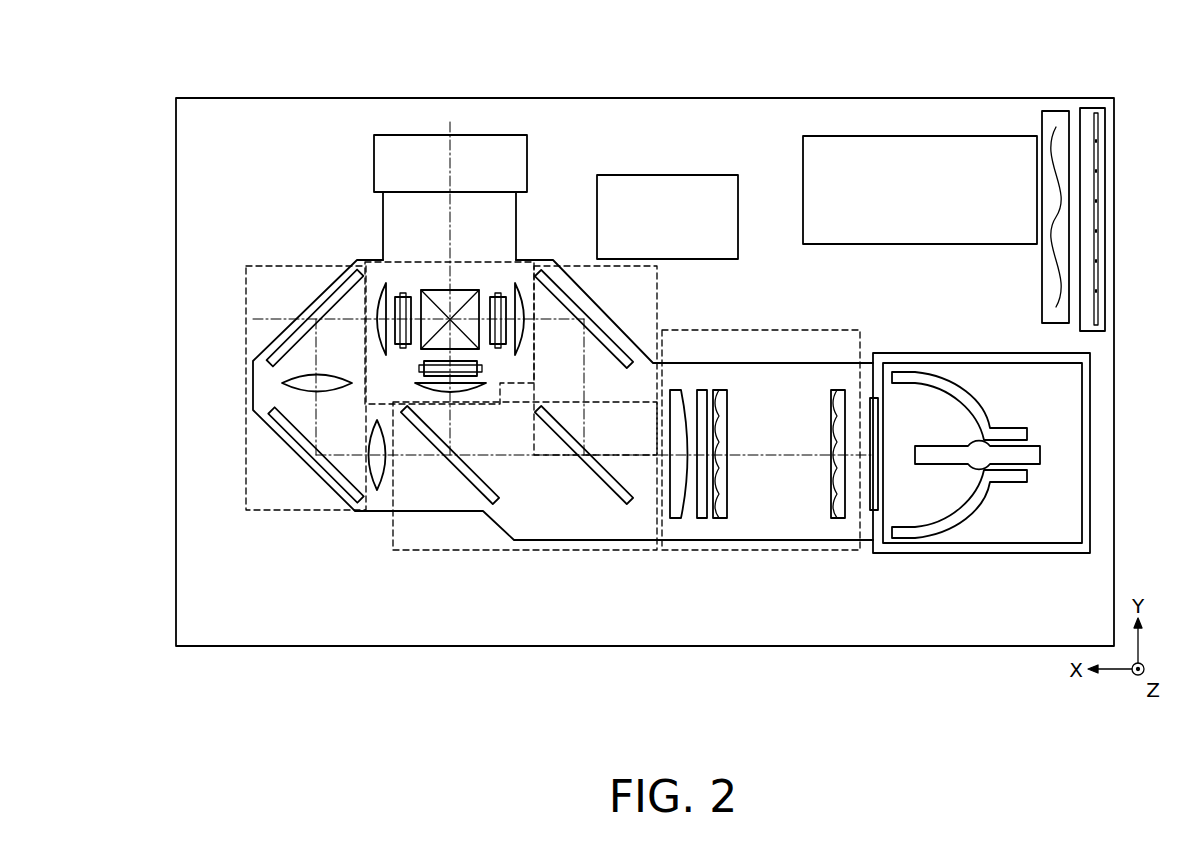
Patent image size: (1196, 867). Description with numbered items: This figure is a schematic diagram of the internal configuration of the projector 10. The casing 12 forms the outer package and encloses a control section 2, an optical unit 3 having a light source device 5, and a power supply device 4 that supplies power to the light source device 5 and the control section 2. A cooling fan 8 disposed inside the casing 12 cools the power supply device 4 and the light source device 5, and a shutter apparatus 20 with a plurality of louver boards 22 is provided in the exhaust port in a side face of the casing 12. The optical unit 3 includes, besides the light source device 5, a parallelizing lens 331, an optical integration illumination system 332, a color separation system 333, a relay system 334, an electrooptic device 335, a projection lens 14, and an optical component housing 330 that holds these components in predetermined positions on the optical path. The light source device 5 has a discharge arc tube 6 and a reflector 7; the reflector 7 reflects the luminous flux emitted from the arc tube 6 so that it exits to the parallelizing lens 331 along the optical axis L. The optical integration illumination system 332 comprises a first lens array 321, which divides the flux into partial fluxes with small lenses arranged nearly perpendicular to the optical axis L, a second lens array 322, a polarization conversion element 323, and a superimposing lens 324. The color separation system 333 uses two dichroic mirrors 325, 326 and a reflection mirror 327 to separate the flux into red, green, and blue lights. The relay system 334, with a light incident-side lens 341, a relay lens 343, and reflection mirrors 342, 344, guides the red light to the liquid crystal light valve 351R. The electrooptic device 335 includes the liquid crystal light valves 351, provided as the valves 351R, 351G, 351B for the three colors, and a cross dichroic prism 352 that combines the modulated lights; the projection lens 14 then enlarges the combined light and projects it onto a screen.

The projector 10 is at (690, 90).
The casing 12 is at (487, 97).
The control section 2 is at (724, 182).
The optical unit 3 is at (594, 161).
The power supply device 4 is at (805, 190).
The light source device 5 is at (981, 500).
The discharge arc tube 6 is at (948, 458).
The reflector 7 is at (977, 492).
The cooling fan 8 is at (1055, 117).
The projection lens 14 is at (515, 157).
The shutter apparatus 20 is at (1088, 115).
The louver boards 22 is at (1100, 146).
The first lens array 321 is at (838, 388).
The second lens array 322 is at (722, 388).
The polarization conversion element 323 is at (703, 388).
The superimposing lens 324 is at (678, 388).
The dichroic mirror 325 is at (604, 484).
The dichroic mirror 326 is at (472, 482).
The reflection mirror 327 is at (600, 330).
The optical component housing 330 is at (636, 542).
The parallelizing lens 331 is at (872, 492).
The optical integration illumination system 332 is at (700, 552).
The color separation system 333 is at (586, 552).
The relay system 334 is at (246, 393).
The electrooptic device 335 is at (460, 278).
The light incident-side lens 341 is at (376, 478).
The reflection mirror 342 is at (268, 412).
The relay lens 343 is at (326, 388).
The reflection mirror 344 is at (300, 330).
The liquid crystal light valves 351 is at (447, 327).
The liquid crystal light valve for R light 351R is at (407, 292).
The liquid crystal light valve for G light 351G is at (482, 370).
The liquid crystal light valve for B light 351B is at (498, 292).
The cross dichroic prism 352 is at (462, 300).
The optical axis L is at (778, 452).